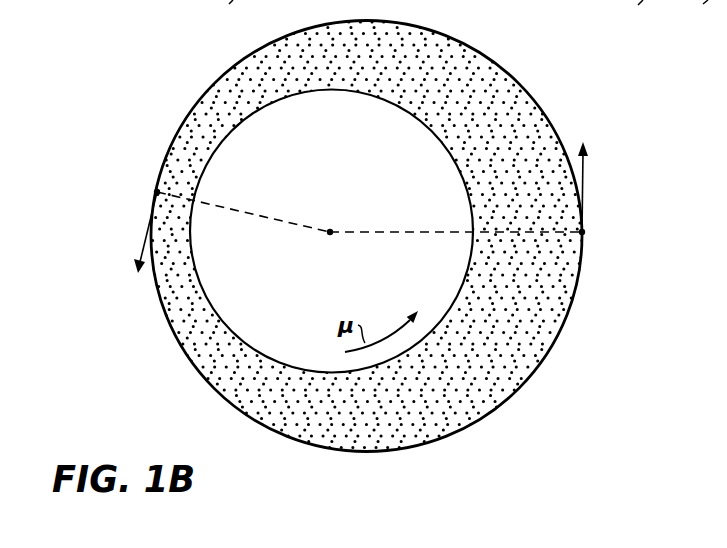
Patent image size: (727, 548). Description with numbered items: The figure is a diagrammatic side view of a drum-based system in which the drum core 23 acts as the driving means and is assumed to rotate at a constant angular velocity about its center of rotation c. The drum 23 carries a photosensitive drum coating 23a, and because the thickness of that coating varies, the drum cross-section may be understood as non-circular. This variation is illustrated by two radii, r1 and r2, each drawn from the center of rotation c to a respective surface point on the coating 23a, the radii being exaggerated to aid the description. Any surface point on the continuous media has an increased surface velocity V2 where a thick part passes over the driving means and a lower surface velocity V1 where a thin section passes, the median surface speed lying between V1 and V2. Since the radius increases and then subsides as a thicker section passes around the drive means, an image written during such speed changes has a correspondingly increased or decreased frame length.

The drum core 23 is at (341, 150).
The drum coating 23a is at (408, 374).
The center of rotation c is at (334, 229).
The radius r1 is at (230, 212).
The radius r2 is at (503, 233).
The lower surface velocity V1 is at (145, 235).
The increased surface velocity V2 is at (585, 184).